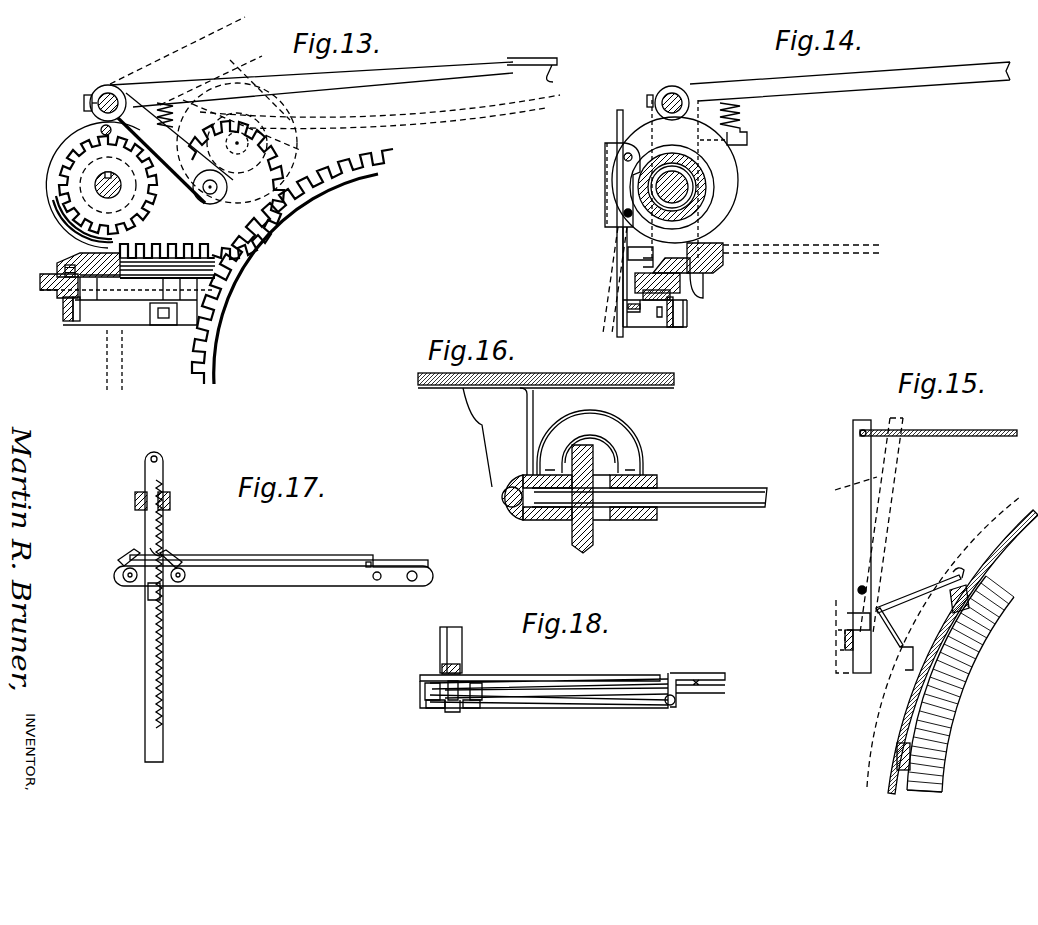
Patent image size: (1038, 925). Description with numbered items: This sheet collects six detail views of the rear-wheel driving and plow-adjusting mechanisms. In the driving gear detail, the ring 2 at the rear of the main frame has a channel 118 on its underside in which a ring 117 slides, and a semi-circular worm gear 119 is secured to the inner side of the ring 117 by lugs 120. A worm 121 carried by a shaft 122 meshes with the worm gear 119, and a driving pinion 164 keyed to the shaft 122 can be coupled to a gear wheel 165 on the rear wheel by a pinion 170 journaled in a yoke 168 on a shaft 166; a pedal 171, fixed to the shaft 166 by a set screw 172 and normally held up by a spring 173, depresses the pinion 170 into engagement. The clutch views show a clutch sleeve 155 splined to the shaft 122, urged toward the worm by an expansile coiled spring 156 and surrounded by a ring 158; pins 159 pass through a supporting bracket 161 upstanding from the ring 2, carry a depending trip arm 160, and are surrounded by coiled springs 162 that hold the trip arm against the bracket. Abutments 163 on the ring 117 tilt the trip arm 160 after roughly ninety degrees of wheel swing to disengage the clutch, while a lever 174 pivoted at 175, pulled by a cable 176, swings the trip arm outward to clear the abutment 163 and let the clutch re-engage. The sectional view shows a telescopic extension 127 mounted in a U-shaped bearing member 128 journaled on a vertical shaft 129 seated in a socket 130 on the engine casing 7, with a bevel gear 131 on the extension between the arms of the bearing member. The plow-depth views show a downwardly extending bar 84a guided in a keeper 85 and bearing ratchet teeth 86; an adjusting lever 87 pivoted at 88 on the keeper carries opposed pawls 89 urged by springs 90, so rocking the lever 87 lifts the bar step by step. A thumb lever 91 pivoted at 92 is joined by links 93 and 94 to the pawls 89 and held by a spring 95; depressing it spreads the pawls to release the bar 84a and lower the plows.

In FIG. 13, the ring 2 is at (40, 283).
In FIG. 14, the ring 2 is at (712, 286).
In FIG. 16, the engine casing 7 is at (654, 386).
In FIG. 17, the downwardly extending bar 84a is at (154, 745).
In FIG. 18, the downwardly extending bar 84a is at (452, 712).
In FIG. 17, the keeper 85 is at (171, 502).
In FIG. 18, the keeper 85 is at (440, 643).
In FIG. 17, the ratchet teeth 86 is at (162, 600).
In FIG. 18, the ratchet teeth 86 is at (447, 702).
In FIG. 17, the adjusting lever 87 is at (293, 586).
In FIG. 18, the adjusting lever 87 is at (588, 694).
In FIG. 17, the pivot 88 is at (146, 590).
In FIG. 18, the pivot 88 is at (462, 668).
In FIG. 17, the opposed pawls 89 is at (168, 548).
In FIG. 18, the opposed pawls 89 is at (426, 700).
In FIG. 17, the springs 90 is at (180, 556).
In FIG. 18, the springs 90 is at (485, 686).
In FIG. 17, the thumb lever 91 is at (400, 560).
In FIG. 18, the thumb lever 91 is at (690, 673).
In FIG. 18, the pivot 92 is at (678, 705).
In FIG. 17, the link 93 is at (283, 556).
In FIG. 18, the link 93 is at (625, 706).
In FIG. 18, the link 94 is at (638, 676).
In FIG. 18, the spring 95 is at (727, 689).
In FIG. 13, the ring 117 is at (70, 316).
In FIG. 14, the ring 117 is at (680, 327).
In FIG. 15, the ring 117 is at (990, 548).
In FIG. 13, the channel 118 is at (62, 300).
In FIG. 14, the channel 118 is at (663, 312).
In FIG. 13, the semi-circular worm gear 119 is at (125, 268).
In FIG. 14, the semi-circular worm gear 119 is at (722, 266).
In FIG. 15, the semi-circular worm gear 119 is at (962, 655).
In FIG. 13, the lugs 120 is at (172, 322).
In FIG. 14, the lugs 120 is at (704, 295).
In FIG. 15, the lugs 120 is at (968, 605).
In FIG. 13, the worm 121 is at (50, 184).
In FIG. 13, the shaft 122 is at (104, 180).
In FIG. 14, the shaft 122 is at (696, 212).
In FIG. 16, the telescopic extension 127 is at (722, 505).
In FIG. 16, the U-shaped bearing member 128 is at (636, 460).
In FIG. 16, the vertical shaft 129 is at (500, 508).
In FIG. 16, the socket 130 is at (490, 435).
In FIG. 16, the bevel gear 131 is at (578, 542).
In FIG. 14, the clutch sleeve 155 is at (700, 193).
In FIG. 14, the expansile coiled spring 156 is at (702, 178).
In FIG. 14, the ring 158 is at (738, 186).
In FIG. 14, the pins 159 is at (624, 157).
In FIG. 14, the trip arm 160 is at (635, 284).
In FIG. 15, the trip arm 160 is at (845, 638).
In FIG. 14, the supporting bracket 161 is at (605, 195).
In FIG. 14, the coiled springs 162 is at (624, 213).
In FIG. 14, the abutments 163 is at (623, 318).
In FIG. 15, the abutments 163 is at (900, 597).
In FIG. 13, the driving pinion 164 is at (72, 200).
In FIG. 13, the gear wheel 165 is at (280, 222).
In FIG. 13, the shaft 166 is at (103, 97).
In FIG. 14, the shaft 166 is at (674, 95).
In FIG. 13, the yoke 168 is at (210, 116).
In FIG. 13, the pinion 170 is at (245, 168).
In FIG. 13, the pedal 171 is at (215, 42).
In FIG. 14, the pedal 171 is at (915, 82).
In FIG. 13, the set screw 172 is at (84, 103).
In FIG. 14, the set screw 172 is at (648, 99).
In FIG. 13, the spring 173 is at (158, 103).
In FIG. 14, the spring 173 is at (748, 112).
In FIG. 14, the lever 174 is at (620, 298).
In FIG. 15, the lever 174 is at (855, 510).
In FIG. 15, the pivot 175 is at (858, 590).
In FIG. 15, the cable 176 is at (965, 437).